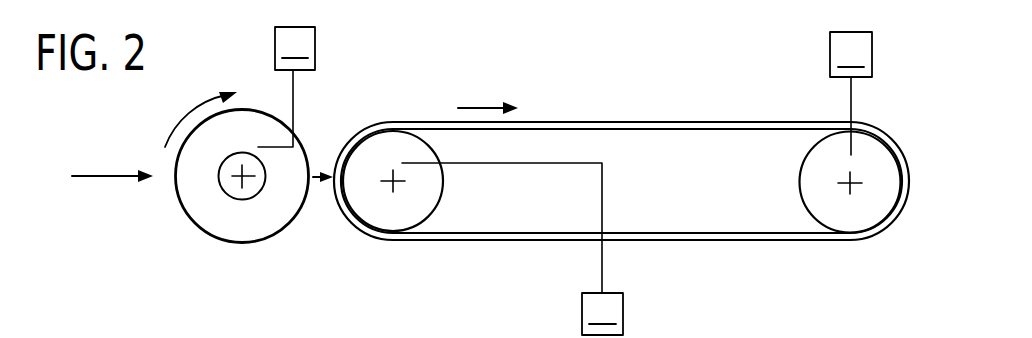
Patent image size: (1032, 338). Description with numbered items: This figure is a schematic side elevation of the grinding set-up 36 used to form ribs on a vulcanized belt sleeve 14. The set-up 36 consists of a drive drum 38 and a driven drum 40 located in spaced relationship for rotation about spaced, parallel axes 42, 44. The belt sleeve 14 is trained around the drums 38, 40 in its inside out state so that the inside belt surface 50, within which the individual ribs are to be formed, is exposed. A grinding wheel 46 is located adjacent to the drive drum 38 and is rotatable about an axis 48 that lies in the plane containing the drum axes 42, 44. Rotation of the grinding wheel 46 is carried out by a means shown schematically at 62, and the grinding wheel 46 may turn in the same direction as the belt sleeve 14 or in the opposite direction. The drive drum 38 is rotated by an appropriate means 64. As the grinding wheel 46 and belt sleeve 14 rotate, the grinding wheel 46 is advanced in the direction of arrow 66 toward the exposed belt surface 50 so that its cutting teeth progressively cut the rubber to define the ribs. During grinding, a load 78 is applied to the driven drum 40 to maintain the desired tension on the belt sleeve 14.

The belt sleeve 14 is at (752, 123).
The grinding set-up 36 is at (621, 125).
The drive drum 38 is at (396, 215).
The driven drum 40 is at (873, 152).
The axis 42 is at (398, 183).
The axis 44 is at (848, 187).
The grinding wheel 46 is at (247, 108).
The axis 48 is at (232, 184).
The inside belt surface 50 is at (357, 226).
The means for rotating the grinding wheel 62 is at (286, 87).
The means for rotating the drive drum 64 is at (512, 249).
The arrow 66 is at (103, 174).
The load 78 is at (851, 93).